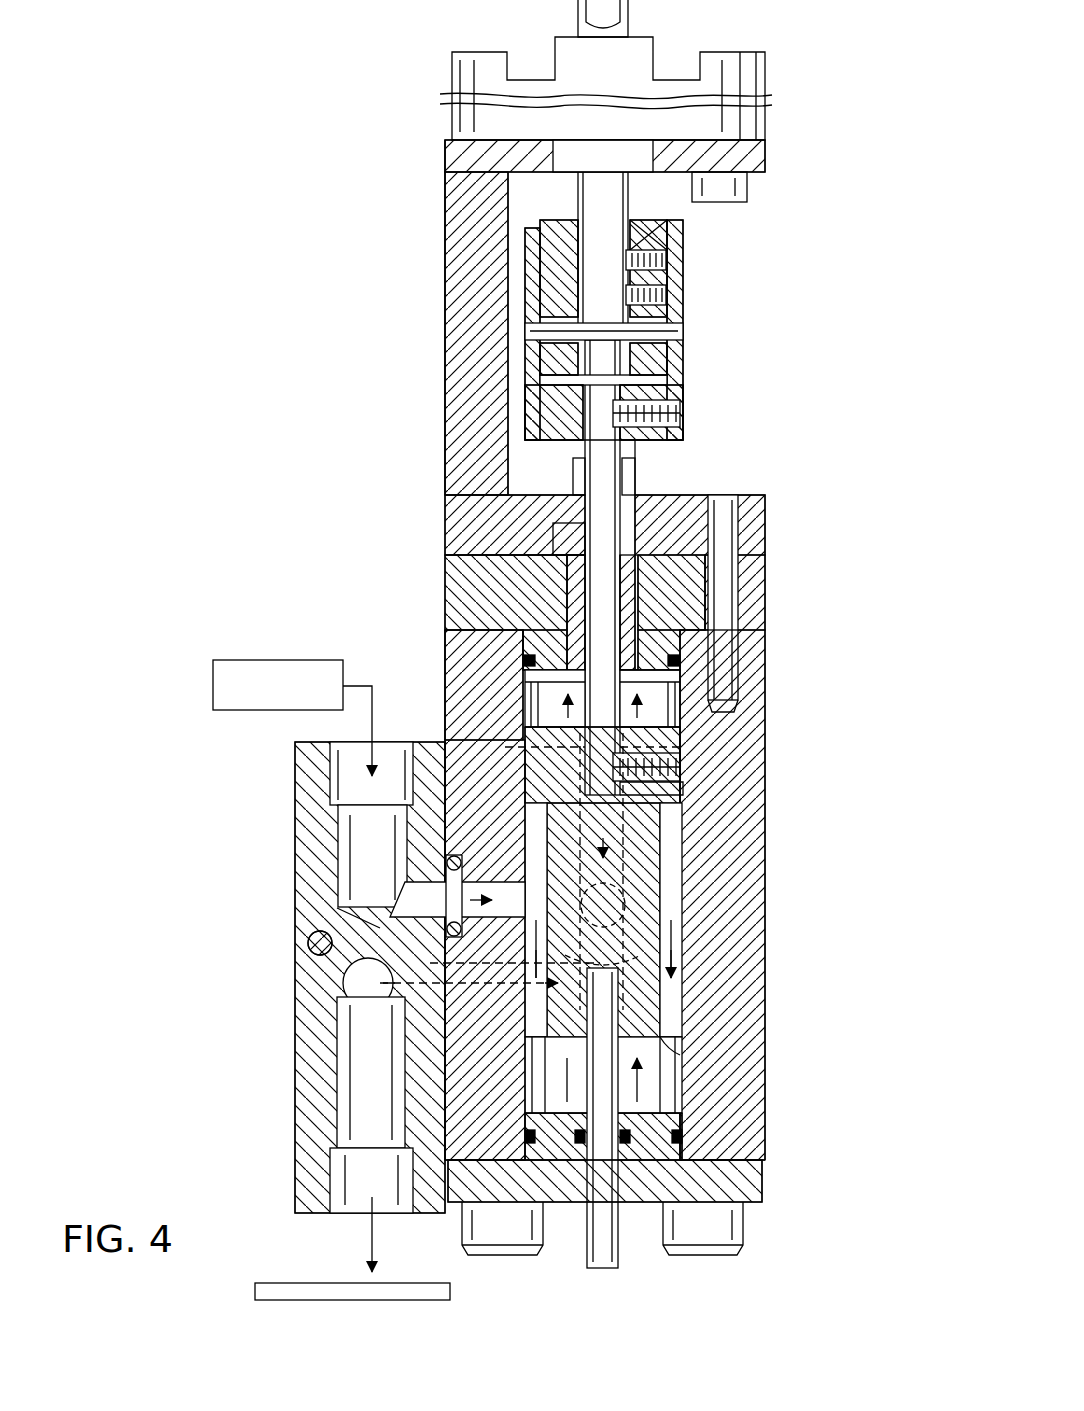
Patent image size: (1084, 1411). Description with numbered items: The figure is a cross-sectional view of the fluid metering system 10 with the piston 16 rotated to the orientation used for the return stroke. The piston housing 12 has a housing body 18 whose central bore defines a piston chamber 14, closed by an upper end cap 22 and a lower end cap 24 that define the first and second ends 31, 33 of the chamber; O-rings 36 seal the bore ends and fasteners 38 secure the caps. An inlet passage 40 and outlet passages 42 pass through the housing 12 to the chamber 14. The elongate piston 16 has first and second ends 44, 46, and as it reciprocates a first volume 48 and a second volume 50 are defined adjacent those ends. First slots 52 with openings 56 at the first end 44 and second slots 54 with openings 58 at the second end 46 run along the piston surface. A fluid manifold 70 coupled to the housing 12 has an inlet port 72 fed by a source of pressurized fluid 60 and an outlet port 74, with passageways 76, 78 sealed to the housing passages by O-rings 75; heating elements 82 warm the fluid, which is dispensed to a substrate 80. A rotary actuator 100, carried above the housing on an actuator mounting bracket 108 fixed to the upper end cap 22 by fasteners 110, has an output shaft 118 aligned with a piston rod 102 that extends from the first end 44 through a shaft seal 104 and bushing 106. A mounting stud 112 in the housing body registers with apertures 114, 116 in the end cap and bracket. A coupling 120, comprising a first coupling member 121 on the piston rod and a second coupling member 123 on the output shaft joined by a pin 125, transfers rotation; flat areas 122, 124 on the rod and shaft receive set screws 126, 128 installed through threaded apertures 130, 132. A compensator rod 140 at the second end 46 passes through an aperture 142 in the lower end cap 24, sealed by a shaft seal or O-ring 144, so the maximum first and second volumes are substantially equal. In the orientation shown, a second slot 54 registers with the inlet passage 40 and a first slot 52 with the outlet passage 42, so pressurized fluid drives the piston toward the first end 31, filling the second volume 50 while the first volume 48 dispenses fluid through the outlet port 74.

The fluid metering system 10 is at (166, 303).
The piston housing 12 is at (768, 820).
The piston chamber 14 is at (686, 860).
The piston 16 is at (686, 994).
The housing body 18 is at (766, 902).
The upper end cap 22 is at (445, 610).
The lower end cap 24 is at (764, 1192).
The first end of the piston chamber 31 is at (688, 690).
The second end of the piston chamber 33 is at (545, 1112).
The O-rings 36 is at (674, 640).
The fasteners 38 is at (745, 1225).
The inlet passage 40 is at (505, 884).
The outlet passages 42 is at (485, 950).
The first end of the piston 44 is at (548, 712).
The second end of the piston 46 is at (655, 1052).
The first volume 48 is at (665, 718).
The second volume 50 is at (692, 1090).
The first slots 52 is at (688, 940).
The second slots 54 is at (530, 832).
The openings of the first slots 56 is at (585, 748).
The openings of the second slots 58 is at (692, 1038).
The source of pressurized fluid 60 is at (213, 680).
The fluid manifold 70 is at (295, 1082).
The inlet port 72 is at (388, 756).
The outlet port 74 is at (363, 1210).
The O-rings 75 is at (438, 936).
The inlet passageway 76 is at (445, 882).
The outlet passageway 78 is at (455, 1084).
The substrate 80 is at (268, 1283).
The heating elements 82 is at (308, 943).
The rotary actuator 100 is at (452, 68).
The piston rod 102 is at (630, 455).
The shaft seal 104 is at (570, 630).
The bushing 106 is at (556, 540).
The actuator mounting bracket 108 is at (445, 402).
The fasteners 110 is at (573, 482).
The mounting stud 112 is at (725, 650).
The aperture 114 is at (725, 590).
The aperture 116 is at (722, 500).
The output shaft 118 is at (650, 198).
The coupling 120 is at (690, 382).
The first coupling member 121 is at (548, 420).
The flat area 122 is at (683, 434).
The second coupling member 123 is at (550, 240).
The flat area 124 is at (662, 280).
The pin 125 is at (680, 330).
The set screw 126 is at (682, 408).
The set screw 128 is at (668, 228).
The threaded aperture 130 is at (683, 418).
The threaded aperture 132 is at (666, 257).
The compensator rod 140 is at (621, 1262).
The aperture 142 is at (620, 1176).
The shaft seal or O-ring 144 is at (582, 1150).